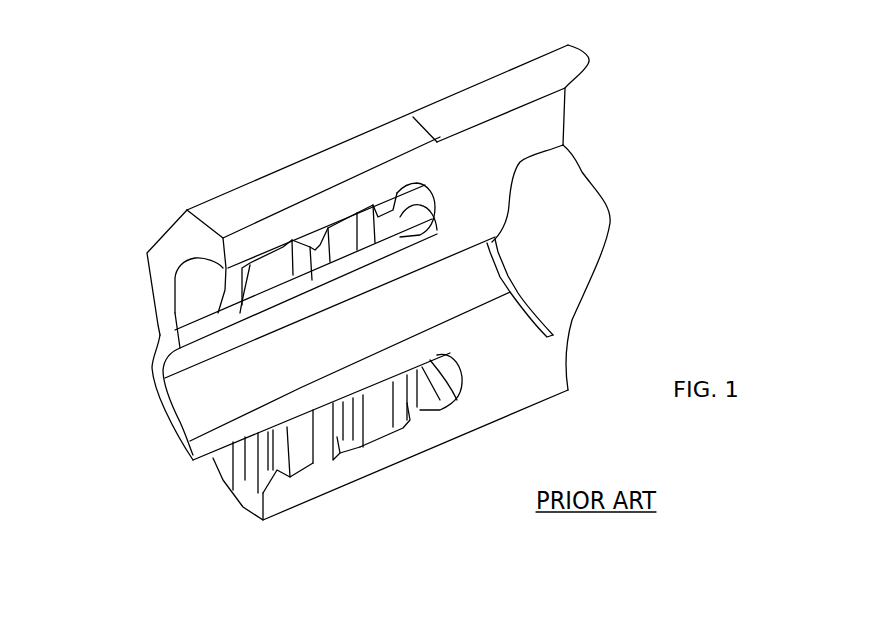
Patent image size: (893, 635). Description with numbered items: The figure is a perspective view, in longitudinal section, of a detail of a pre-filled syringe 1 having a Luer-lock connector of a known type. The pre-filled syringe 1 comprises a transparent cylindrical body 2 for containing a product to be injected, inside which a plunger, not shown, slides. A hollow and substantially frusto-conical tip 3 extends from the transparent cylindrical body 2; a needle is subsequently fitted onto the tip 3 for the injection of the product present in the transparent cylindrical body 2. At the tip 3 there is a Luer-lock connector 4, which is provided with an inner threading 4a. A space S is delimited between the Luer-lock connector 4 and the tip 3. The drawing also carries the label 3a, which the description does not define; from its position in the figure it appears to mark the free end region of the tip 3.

The pre-filled syringe 1 is at (304, 136).
The transparent cylindrical body 2 is at (553, 207).
The tip 3 is at (228, 340).
The rounded end of guide rail 3a is at (158, 364).
The Luer-lock connector 4 is at (235, 207).
The inner threading 4a is at (302, 435).
The space S is at (414, 197).